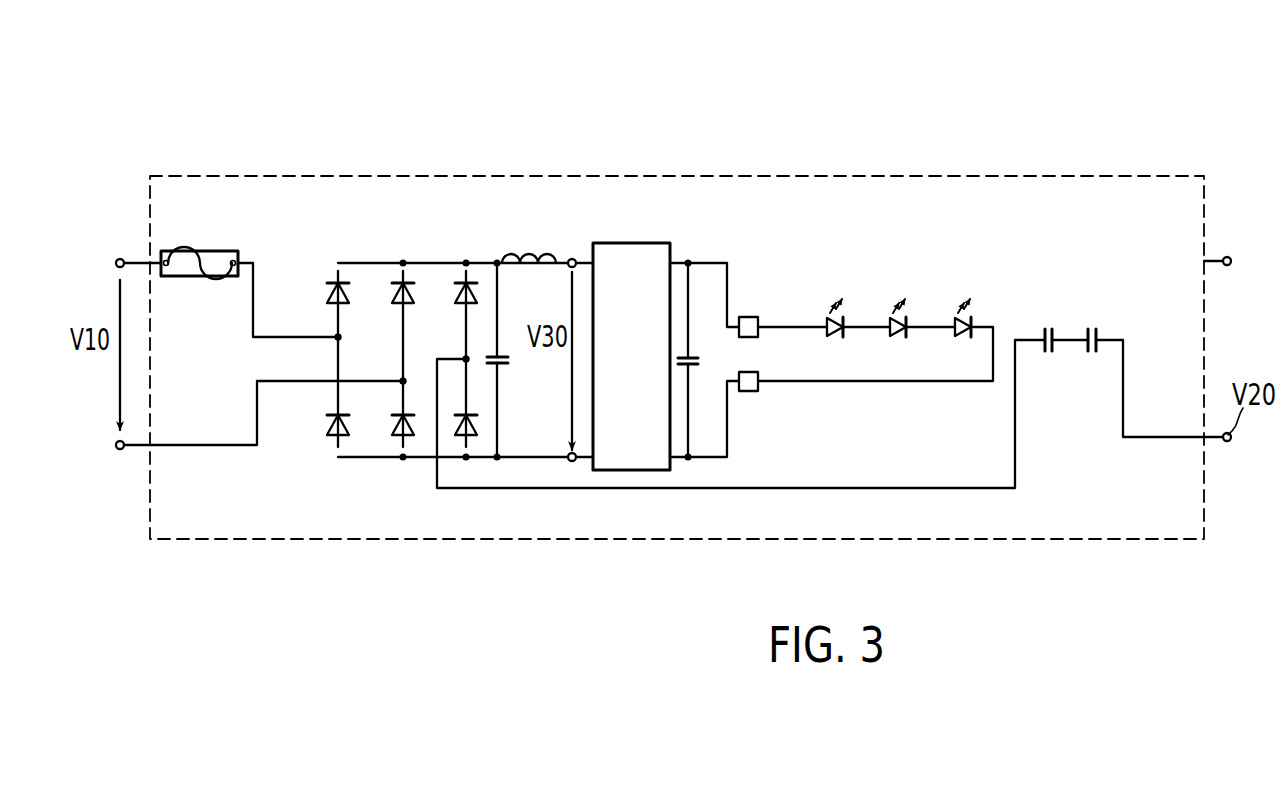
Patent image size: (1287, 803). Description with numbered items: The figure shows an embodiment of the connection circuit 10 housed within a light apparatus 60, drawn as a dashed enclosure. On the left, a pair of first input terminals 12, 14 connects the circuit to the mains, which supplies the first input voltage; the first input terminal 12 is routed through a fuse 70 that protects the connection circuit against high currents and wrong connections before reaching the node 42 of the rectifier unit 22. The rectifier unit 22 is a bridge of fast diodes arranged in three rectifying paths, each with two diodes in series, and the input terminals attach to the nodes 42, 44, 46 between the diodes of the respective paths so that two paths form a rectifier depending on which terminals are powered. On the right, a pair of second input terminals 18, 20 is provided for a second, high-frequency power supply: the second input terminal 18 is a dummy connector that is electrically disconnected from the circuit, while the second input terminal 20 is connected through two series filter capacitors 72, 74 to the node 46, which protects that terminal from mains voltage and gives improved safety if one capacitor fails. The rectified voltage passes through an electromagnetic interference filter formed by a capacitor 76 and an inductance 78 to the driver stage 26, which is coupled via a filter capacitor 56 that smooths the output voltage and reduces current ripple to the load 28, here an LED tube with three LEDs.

The connection circuit 10 is at (267, 127).
The first input terminal 12 is at (117, 259).
The first input terminal 14 is at (117, 449).
The second input terminal 18 is at (1230, 258).
The second input terminal 20 is at (1230, 440).
The rectifier unit 22 is at (385, 480).
The driver stage 26 is at (634, 255).
The load 28 is at (895, 273).
The node 42 is at (341, 339).
The node 44 is at (405, 380).
The node 46 is at (464, 357).
The filter capacitor 56 is at (693, 357).
The light apparatus 60 is at (937, 137).
The fuse 70 is at (215, 250).
The filter capacitor 72 is at (1053, 328).
The filter capacitor 74 is at (1097, 328).
The capacitor 76 is at (507, 364).
The inductance 78 is at (527, 252).